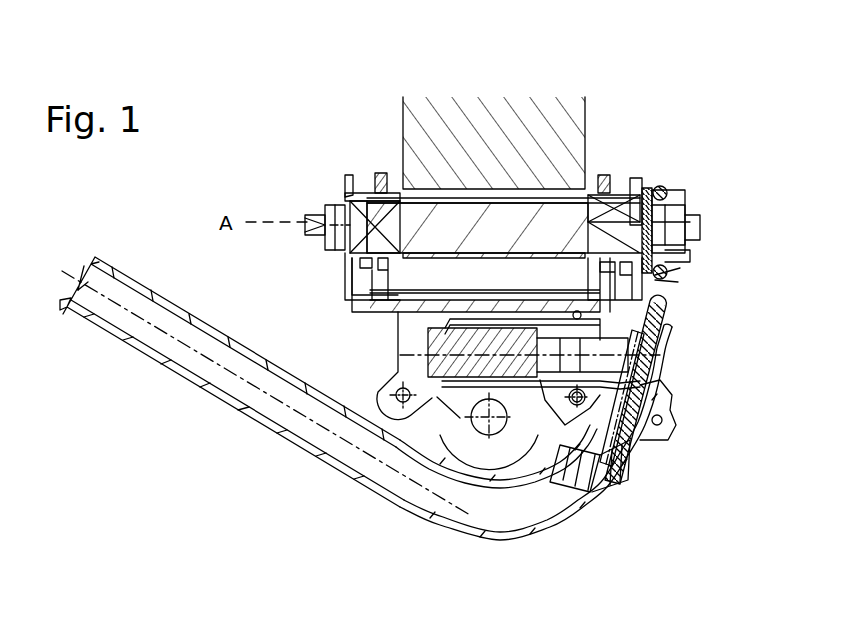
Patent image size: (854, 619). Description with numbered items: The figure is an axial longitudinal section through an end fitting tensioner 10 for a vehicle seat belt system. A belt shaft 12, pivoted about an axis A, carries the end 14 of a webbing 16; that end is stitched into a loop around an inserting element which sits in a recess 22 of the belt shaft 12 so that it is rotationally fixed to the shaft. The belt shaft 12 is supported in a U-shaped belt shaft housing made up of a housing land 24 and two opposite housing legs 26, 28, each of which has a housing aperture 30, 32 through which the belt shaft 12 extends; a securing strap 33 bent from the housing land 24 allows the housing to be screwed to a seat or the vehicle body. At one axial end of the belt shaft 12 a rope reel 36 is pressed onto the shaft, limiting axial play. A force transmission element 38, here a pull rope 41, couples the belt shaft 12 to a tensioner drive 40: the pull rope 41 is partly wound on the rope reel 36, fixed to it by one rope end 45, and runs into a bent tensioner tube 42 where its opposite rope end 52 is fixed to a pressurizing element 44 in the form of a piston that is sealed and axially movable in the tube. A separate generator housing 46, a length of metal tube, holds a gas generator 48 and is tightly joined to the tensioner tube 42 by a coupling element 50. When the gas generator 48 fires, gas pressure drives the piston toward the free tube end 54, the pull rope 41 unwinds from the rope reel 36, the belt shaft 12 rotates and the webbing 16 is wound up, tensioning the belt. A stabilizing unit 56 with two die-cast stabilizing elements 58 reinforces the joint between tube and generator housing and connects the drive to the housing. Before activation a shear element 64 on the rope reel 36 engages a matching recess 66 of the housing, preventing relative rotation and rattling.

The end fitting tensioner 10 is at (212, 483).
The belt shaft 12 is at (648, 190).
The end of the webbing 14 is at (432, 174).
The webbing 16 is at (497, 130).
The recess 22 is at (591, 174).
The housing land 24 is at (435, 302).
The housing leg 26 is at (378, 185).
The housing leg 28 is at (610, 188).
The housing aperture 30 is at (374, 208).
The housing aperture 32 is at (700, 222).
The securing strap 33 is at (513, 443).
The rope reel 36 is at (690, 252).
The force transmission element 38 is at (712, 243).
The pull rope 41 is at (665, 188).
The tensioner drive 40 is at (623, 510).
The tensioner tube 42 is at (160, 362).
The pressurizing element 44 is at (618, 458).
The rope end 45 is at (664, 276).
The generator housing 46 is at (468, 397).
The gas generator 48 is at (437, 352).
The coupling element 50 is at (653, 367).
The rope end 52 is at (600, 467).
The free tube end 54 is at (66, 260).
The stabilizing unit 56 is at (708, 412).
The stabilizing elements 58 is at (667, 413).
The shear element 64 is at (504, 278).
The recess 66 is at (356, 280).